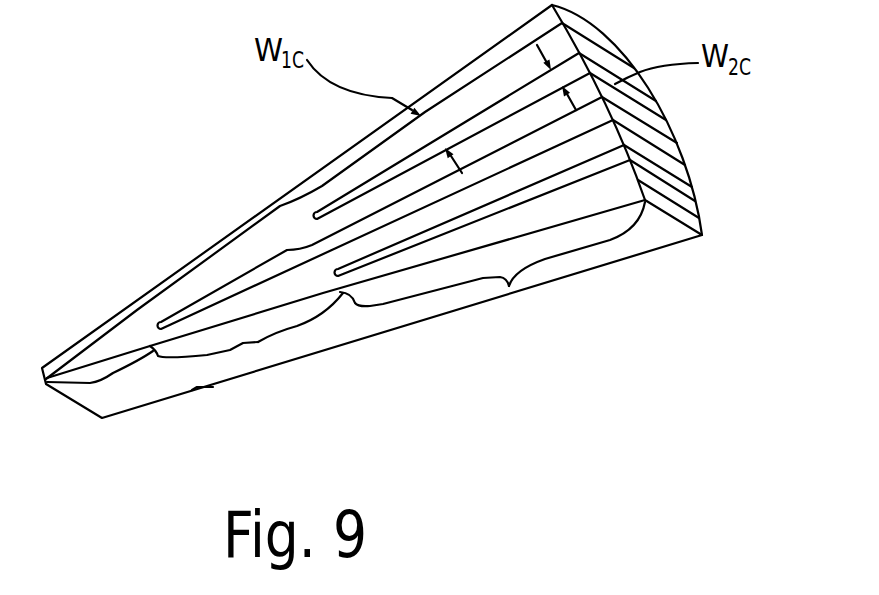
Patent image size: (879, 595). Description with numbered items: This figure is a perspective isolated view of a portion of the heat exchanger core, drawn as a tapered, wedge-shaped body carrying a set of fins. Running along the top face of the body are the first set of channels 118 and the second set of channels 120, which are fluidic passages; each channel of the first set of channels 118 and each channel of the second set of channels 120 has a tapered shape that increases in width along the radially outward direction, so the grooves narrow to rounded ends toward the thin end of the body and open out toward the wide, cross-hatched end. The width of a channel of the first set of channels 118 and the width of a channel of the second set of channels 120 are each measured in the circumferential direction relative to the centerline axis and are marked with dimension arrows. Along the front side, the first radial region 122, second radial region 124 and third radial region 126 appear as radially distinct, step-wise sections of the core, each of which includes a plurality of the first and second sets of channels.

The first set of channels 118 is at (200, 283).
The second set of channels 120 is at (252, 222).
The first radial region 122 is at (101, 383).
The second radial region 124 is at (258, 342).
The third radial region 126 is at (509, 286).